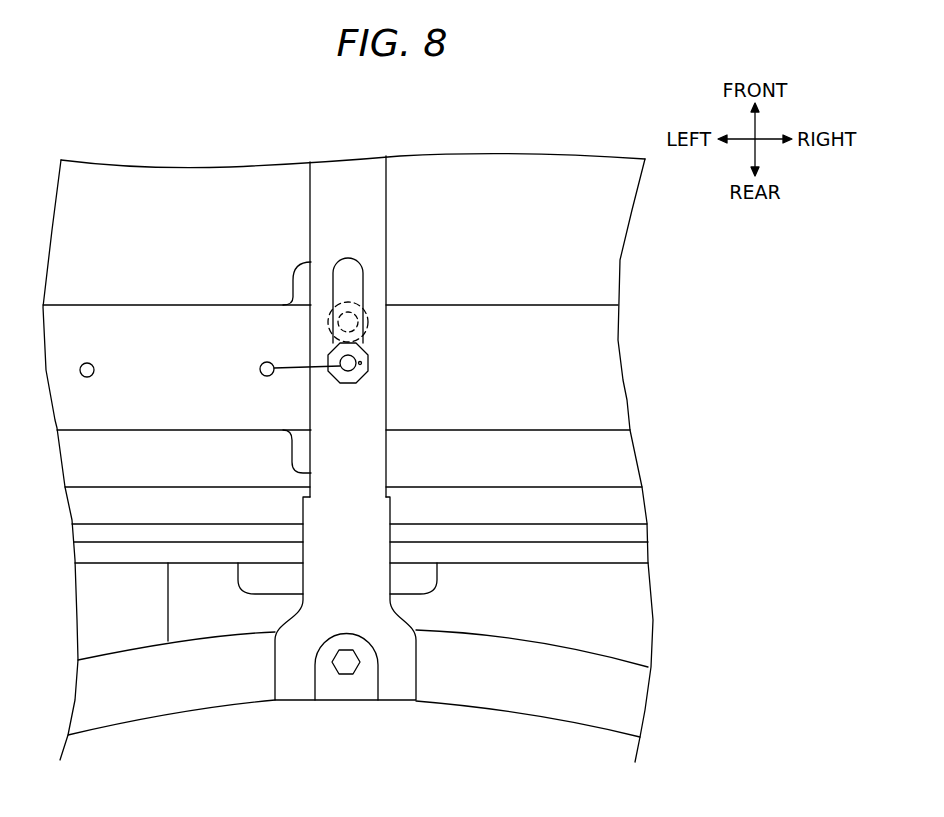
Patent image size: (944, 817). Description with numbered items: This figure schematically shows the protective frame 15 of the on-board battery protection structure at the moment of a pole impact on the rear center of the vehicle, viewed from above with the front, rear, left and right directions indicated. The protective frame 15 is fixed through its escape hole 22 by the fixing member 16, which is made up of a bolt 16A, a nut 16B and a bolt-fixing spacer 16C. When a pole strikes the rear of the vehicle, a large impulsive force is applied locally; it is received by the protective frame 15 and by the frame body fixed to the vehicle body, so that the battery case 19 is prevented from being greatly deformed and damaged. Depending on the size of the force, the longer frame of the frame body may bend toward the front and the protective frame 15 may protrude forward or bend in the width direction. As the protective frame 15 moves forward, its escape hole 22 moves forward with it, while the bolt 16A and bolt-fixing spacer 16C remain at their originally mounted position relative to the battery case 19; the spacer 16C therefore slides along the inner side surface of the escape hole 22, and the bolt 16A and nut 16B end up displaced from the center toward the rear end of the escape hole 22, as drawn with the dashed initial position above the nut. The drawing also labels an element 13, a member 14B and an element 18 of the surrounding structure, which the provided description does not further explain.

The vehicle body panel 13 is at (595, 268).
The lower body member 14B is at (215, 692).
The protective frame 15 is at (363, 192).
The fixing member 16 is at (250, 300).
The bolt 16A is at (260, 366).
The nut 16B is at (348, 384).
The bolt-fixing spacer 16C is at (325, 333).
The panel 18 is at (82, 317).
The battery case 19 is at (654, 620).
The escape hole 22 is at (355, 283).